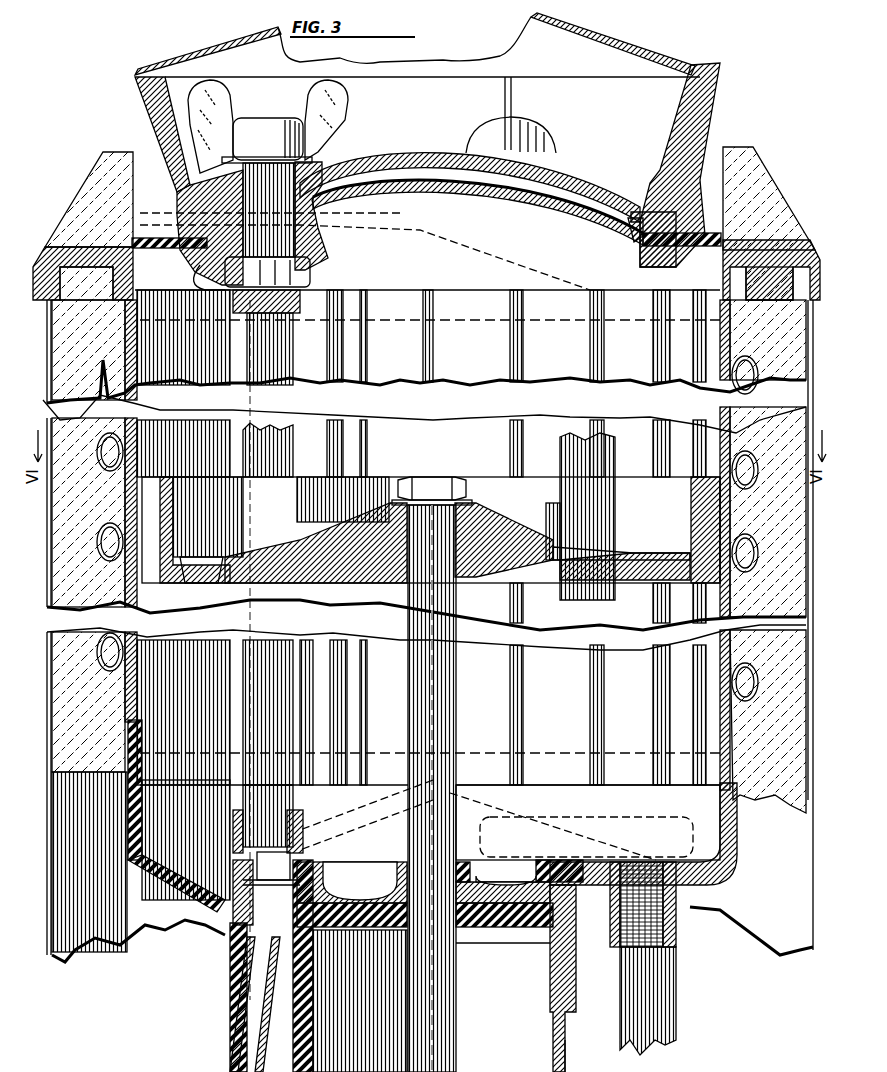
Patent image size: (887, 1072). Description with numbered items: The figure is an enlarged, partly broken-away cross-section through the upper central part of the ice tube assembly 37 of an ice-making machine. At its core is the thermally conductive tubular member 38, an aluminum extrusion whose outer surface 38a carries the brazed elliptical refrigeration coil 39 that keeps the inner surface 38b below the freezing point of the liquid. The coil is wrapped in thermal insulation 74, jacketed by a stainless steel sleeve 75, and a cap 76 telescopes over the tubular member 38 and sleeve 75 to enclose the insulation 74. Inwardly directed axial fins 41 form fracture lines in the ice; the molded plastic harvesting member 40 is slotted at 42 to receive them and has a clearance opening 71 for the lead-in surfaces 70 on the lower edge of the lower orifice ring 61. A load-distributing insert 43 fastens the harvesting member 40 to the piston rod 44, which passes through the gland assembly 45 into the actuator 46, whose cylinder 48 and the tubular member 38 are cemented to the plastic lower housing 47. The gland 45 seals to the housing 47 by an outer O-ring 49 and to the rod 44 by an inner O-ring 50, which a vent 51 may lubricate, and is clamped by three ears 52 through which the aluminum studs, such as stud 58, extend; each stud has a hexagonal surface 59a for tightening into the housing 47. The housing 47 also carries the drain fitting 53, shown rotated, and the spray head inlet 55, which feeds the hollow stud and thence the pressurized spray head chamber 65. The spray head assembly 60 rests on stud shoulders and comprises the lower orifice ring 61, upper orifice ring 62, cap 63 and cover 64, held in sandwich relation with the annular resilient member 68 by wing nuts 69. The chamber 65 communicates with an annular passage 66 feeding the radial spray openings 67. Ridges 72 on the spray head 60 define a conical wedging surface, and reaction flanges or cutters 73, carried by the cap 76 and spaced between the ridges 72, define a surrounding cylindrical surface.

The ice tube assembly 37 is at (198, 951).
The tubular member 38 is at (136, 425).
The outer surface 38a is at (740, 433).
The inner surface 38b is at (134, 428).
The refrigeration coil 39 is at (100, 521).
The harvesting member 40 is at (389, 290).
The fins 41 is at (515, 735).
The peripheral slots 42 is at (148, 512).
The load-distributing insert 43 is at (496, 499).
The piston rod 44 is at (410, 673).
The gland assembly 45 is at (485, 875).
The actuator 46 is at (575, 1064).
The lower housing 47 is at (733, 848).
The cylinder 48 is at (556, 1010).
The outer O-ring 49 is at (550, 862).
The inner O-ring 50 is at (460, 873).
The vent 51 is at (393, 898).
The clamping ears 52 is at (320, 820).
The drain opening and fitting 53 is at (660, 1012).
The spray head inlet 55 is at (233, 1034).
The elongated stud 58 is at (588, 498).
The hexagonal surface 59a is at (312, 273).
The spray head assembly 60 is at (455, 210).
The lower orifice ring 61 is at (417, 200).
The upper orifice ring 62 is at (670, 233).
The cap 63 is at (600, 181).
The cover 64 is at (640, 50).
The spray head chamber 65 is at (437, 156).
The annular passage 66 is at (636, 228).
The spray openings 67 is at (200, 240).
The annular resilient member 68 is at (710, 232).
The wing nuts 69 is at (337, 105).
The lead-in surfaces 70 is at (205, 312).
The clearance opening 71 is at (208, 567).
The ridges 72 is at (153, 117).
The reaction flanges 73 is at (97, 203).
The thermal insulation 74 is at (760, 515).
The sleeve 75 is at (745, 548).
The cap 76 is at (783, 260).